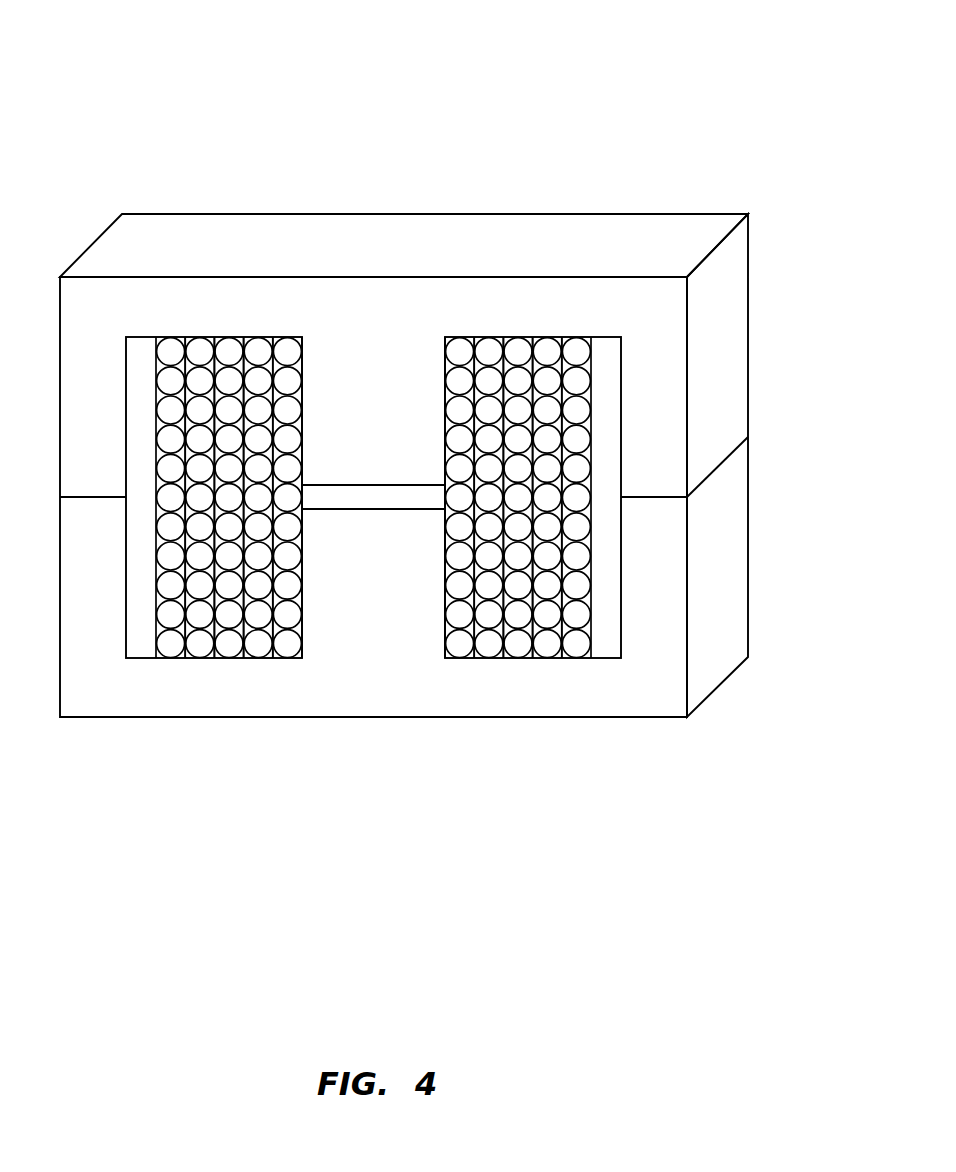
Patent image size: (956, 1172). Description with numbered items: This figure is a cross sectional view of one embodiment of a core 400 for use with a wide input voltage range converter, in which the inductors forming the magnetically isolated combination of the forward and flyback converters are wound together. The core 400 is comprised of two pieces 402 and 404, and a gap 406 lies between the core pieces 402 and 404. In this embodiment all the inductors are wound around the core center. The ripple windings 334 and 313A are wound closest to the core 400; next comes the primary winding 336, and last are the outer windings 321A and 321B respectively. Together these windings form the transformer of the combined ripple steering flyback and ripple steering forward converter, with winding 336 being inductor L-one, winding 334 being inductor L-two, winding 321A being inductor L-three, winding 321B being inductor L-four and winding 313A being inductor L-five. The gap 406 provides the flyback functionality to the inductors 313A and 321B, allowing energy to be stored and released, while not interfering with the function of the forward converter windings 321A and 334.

The core 400 is at (664, 153).
The core piece 402 is at (712, 353).
The core piece 404 is at (712, 575).
The gap 406 is at (373, 498).
The outer winding (L4) 321B is at (170, 337).
The ripple winding (L2) 334 is at (287, 337).
The ripple winding (L5) 313A is at (258, 658).
The primary winding (L1) 336 is at (229, 658).
The outer winding (L3) 321A is at (199, 658).